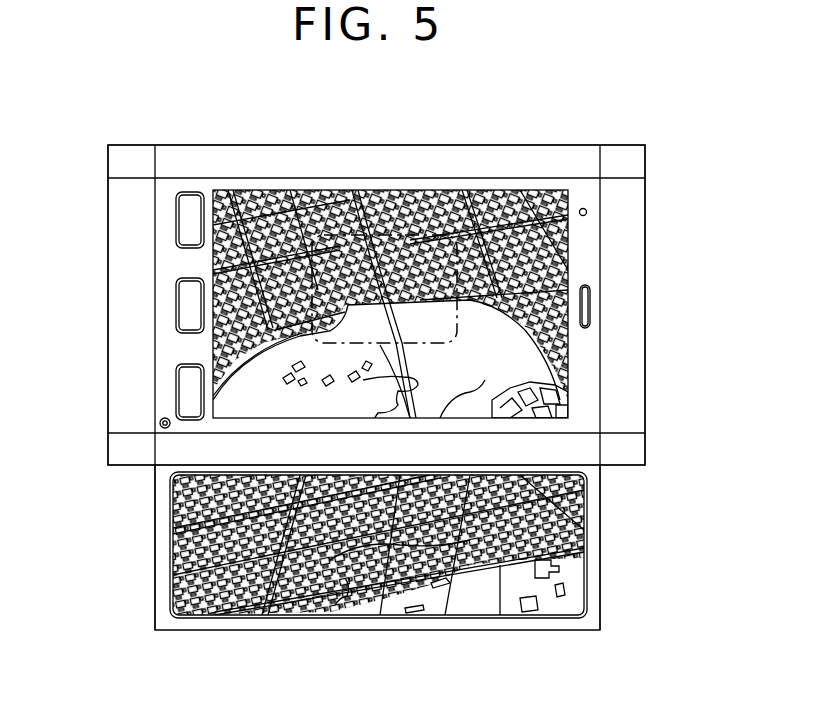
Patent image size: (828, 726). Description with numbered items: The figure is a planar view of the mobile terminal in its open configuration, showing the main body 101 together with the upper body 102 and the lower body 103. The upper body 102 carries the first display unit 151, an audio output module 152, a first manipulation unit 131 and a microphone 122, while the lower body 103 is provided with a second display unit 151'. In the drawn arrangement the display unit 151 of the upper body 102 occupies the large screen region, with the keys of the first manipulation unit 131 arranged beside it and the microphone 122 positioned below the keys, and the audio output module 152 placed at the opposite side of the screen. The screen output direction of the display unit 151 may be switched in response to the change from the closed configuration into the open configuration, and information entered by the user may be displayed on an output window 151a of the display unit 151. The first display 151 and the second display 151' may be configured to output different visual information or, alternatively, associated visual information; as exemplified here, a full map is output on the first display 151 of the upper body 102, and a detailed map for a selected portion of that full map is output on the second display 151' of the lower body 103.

The main body 101 is at (108, 315).
The upper body 102 is at (249, 143).
The lower body 103 is at (154, 565).
The microphone 122 is at (160, 423).
The first manipulation unit 131 is at (188, 390).
The display unit 151 is at (468, 314).
The output window 151a is at (555, 398).
The display unit 151' is at (341, 545).
The audio output module 152 is at (590, 306).